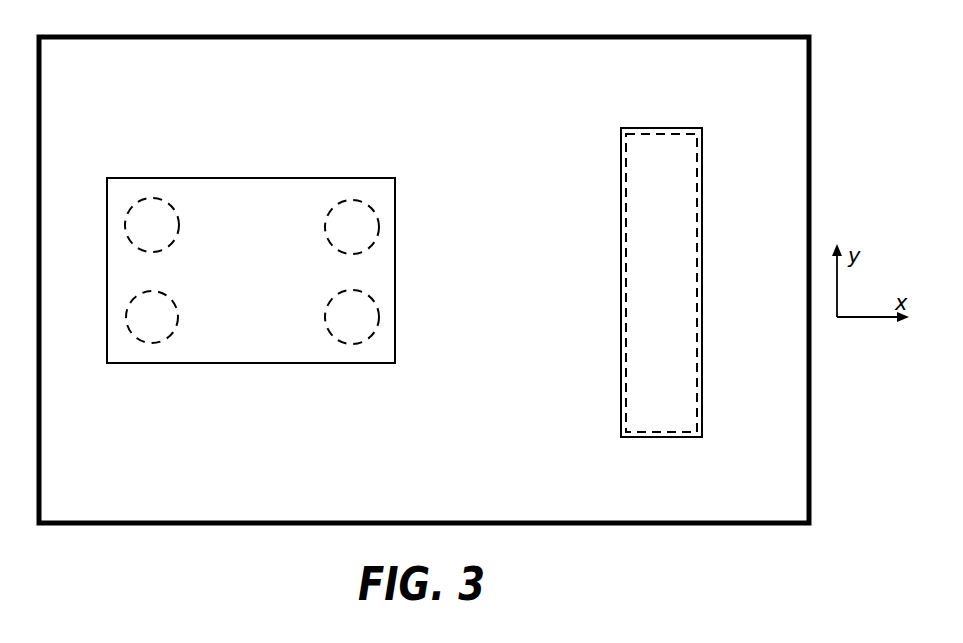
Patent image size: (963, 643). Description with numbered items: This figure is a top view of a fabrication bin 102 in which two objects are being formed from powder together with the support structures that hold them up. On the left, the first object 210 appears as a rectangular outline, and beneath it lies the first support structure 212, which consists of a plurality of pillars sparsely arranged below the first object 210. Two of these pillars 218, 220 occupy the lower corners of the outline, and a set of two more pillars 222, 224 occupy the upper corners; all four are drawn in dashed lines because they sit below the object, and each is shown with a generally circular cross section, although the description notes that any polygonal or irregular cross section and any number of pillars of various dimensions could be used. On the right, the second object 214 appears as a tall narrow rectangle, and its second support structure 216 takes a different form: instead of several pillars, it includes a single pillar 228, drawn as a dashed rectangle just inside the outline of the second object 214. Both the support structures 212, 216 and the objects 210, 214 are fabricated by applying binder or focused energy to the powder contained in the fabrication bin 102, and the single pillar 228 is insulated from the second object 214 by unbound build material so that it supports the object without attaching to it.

The fabrication bin 102 is at (433, 110).
The first object 210 is at (243, 178).
The first support structure 212 is at (390, 216).
The second object 214 is at (652, 128).
The second support structure 216 is at (601, 235).
The pillar 218 is at (194, 313).
The pillar 220 is at (326, 313).
The additional pillar 222 is at (191, 221).
The additional pillar 224 is at (327, 222).
The single pillar 228 is at (621, 190).